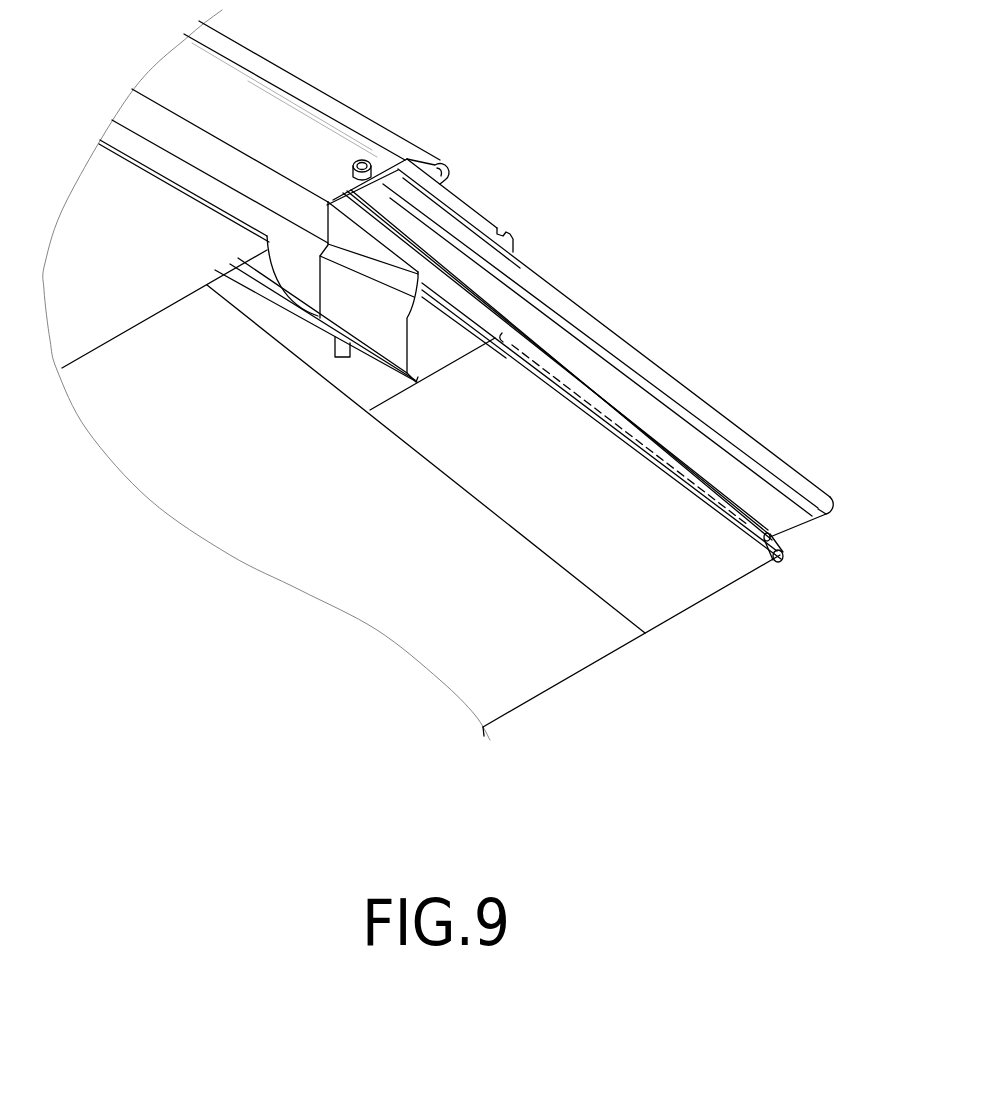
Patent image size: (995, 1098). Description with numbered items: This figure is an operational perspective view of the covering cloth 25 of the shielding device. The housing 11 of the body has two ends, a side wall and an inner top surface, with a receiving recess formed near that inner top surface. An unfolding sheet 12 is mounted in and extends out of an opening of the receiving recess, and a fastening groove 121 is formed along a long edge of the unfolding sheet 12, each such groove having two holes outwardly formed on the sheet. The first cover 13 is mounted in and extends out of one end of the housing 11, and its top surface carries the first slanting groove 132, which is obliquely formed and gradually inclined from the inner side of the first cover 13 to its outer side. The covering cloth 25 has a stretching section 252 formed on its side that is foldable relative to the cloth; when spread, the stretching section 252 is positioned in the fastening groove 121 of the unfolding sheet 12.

The housing 11 is at (288, 112).
The unfolding sheet 12 is at (623, 383).
The first cover 13 is at (397, 348).
The covering cloth 25 is at (113, 192).
The fastening groove 121 is at (826, 512).
The first slanting groove 132 is at (435, 190).
The stretching section 252 is at (710, 582).